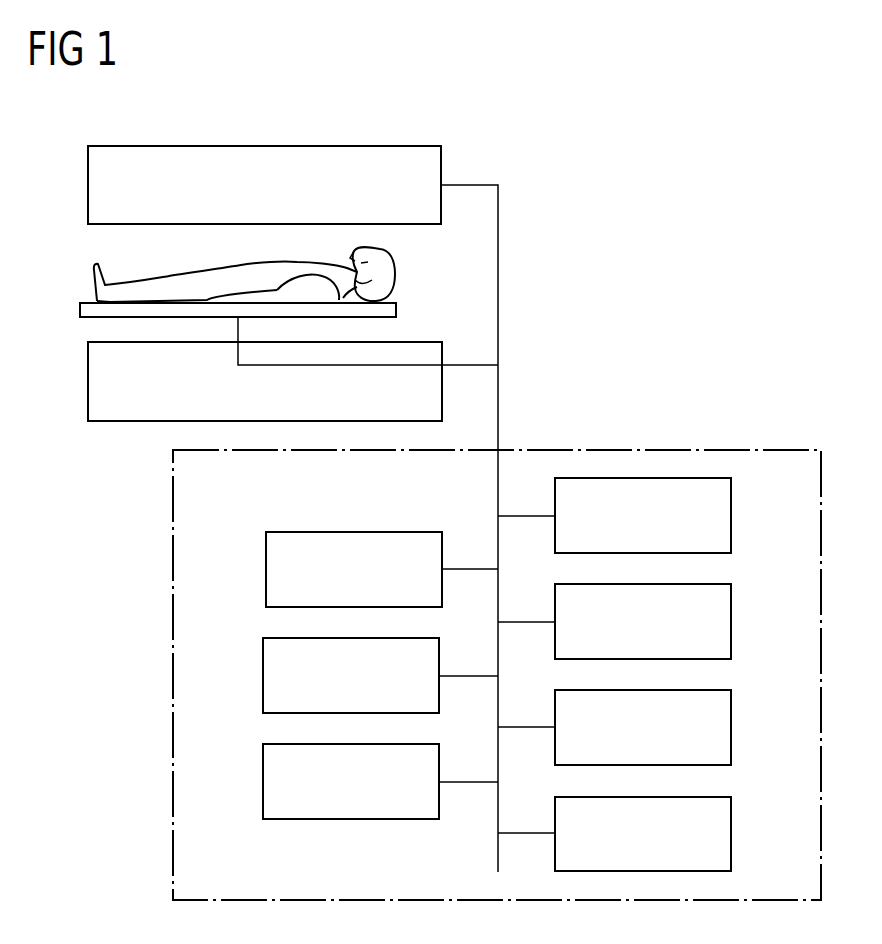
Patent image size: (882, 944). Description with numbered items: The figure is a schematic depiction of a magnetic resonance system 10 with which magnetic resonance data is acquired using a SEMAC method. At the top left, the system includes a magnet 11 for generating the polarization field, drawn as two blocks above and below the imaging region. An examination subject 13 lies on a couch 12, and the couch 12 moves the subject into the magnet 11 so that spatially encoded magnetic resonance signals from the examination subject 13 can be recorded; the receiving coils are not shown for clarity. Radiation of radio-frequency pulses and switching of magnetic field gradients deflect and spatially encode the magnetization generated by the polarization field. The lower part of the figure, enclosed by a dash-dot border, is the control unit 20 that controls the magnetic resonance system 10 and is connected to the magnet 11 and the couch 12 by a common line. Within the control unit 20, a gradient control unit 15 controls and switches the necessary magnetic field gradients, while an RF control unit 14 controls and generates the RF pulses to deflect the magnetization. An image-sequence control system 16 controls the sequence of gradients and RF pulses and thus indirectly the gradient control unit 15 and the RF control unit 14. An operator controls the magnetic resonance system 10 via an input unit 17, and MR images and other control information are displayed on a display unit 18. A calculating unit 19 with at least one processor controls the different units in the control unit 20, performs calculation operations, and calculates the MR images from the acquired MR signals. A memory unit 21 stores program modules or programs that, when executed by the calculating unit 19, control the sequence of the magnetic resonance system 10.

The magnetic resonance system 10 is at (630, 228).
The magnet 11 is at (261, 146).
The couch 12 is at (396, 312).
The examination subject 13 is at (93, 287).
The RF control unit 14 is at (731, 516).
The gradient control unit 15 is at (266, 570).
The image-sequence control system 16 is at (731, 622).
The input unit 17 is at (263, 676).
The display unit 18 is at (731, 728).
The calculating unit 19 is at (263, 782).
The control unit 20 is at (612, 450).
The memory unit 21 is at (731, 835).